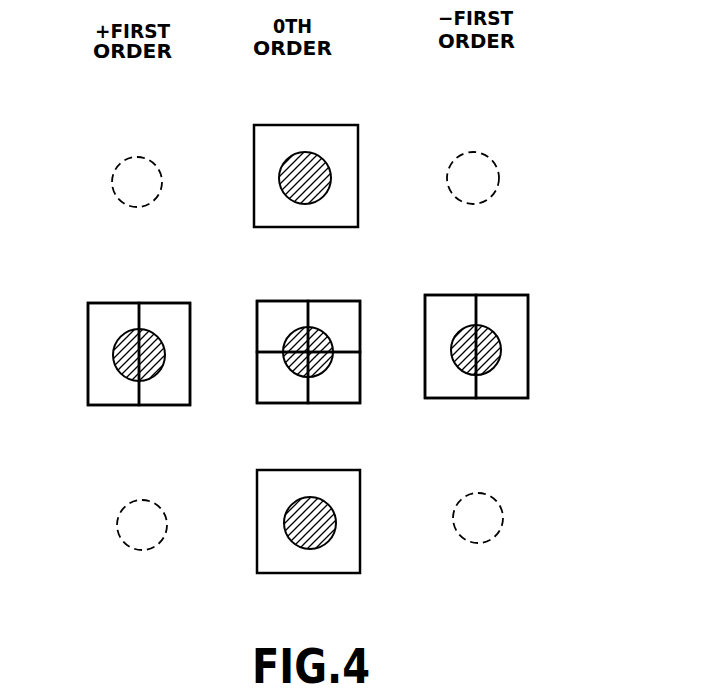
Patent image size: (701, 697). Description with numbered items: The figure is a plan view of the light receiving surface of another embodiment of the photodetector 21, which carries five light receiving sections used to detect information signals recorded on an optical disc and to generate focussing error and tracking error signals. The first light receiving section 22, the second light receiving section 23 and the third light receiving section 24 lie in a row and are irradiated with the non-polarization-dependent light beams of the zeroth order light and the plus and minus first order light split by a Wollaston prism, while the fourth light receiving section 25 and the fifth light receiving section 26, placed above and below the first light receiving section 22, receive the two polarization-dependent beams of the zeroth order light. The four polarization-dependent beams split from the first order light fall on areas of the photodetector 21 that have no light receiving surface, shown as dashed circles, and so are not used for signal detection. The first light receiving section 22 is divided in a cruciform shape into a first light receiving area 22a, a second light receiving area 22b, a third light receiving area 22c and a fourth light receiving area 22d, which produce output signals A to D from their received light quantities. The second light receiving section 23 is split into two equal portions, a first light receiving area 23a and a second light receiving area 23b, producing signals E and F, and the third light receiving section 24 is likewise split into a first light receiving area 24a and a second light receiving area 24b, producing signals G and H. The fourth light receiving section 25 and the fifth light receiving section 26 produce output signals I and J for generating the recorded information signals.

The photodetector 21 is at (417, 113).
The first light receiving section 22 is at (330, 300).
The first light receiving area 22a is at (288, 305).
The second light receiving area 22b is at (285, 395).
The third light receiving area 22c is at (353, 395).
The fourth light receiving area 22d is at (357, 303).
The second light receiving section 23 is at (205, 280).
The first light receiving area 23a is at (103, 397).
The second light receiving area 23b is at (177, 397).
The third light receiving section 24 is at (500, 295).
The first light receiving area 24a is at (447, 393).
The second light receiving area 24b is at (513, 393).
The fourth light receiving section 25 is at (379, 114).
The fifth light receiving section 26 is at (362, 557).